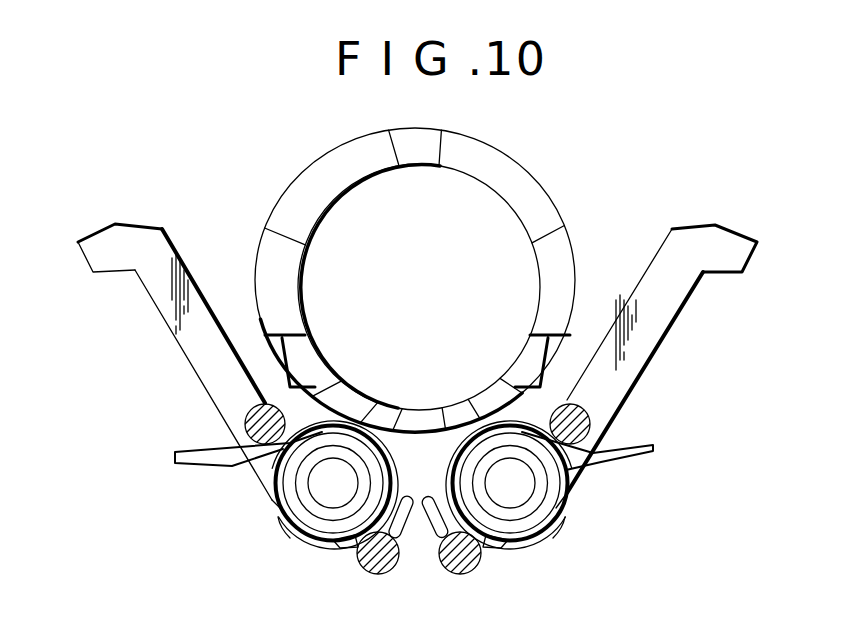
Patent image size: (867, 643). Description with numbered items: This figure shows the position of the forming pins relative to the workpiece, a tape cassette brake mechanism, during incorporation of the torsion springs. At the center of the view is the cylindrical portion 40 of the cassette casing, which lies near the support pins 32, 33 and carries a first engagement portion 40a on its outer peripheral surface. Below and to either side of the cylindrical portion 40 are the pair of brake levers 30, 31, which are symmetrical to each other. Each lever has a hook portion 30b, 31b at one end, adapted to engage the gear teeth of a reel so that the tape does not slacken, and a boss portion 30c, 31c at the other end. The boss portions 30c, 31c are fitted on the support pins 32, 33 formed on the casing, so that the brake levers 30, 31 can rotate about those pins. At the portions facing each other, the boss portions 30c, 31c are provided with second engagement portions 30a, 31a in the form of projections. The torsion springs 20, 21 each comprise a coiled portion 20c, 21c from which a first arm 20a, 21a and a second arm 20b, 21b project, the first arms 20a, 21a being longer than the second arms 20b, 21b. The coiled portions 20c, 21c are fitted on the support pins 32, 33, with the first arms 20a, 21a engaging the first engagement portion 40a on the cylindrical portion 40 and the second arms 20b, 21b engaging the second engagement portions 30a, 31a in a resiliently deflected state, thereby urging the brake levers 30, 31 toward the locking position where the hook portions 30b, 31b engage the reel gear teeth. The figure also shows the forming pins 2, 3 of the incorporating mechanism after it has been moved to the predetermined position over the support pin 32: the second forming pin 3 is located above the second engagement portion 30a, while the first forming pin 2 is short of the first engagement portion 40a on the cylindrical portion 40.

The cylindrical portion 40 is at (505, 166).
The first engagement portion 40a is at (270, 356).
The brake lever 30 is at (175, 362).
The hook portion 30b is at (92, 256).
The boss portion 30c is at (350, 428).
The second engagement portion 30a is at (363, 566).
The brake lever 31 is at (662, 359).
The hook portion 31b is at (740, 258).
The boss portion 31c is at (480, 428).
The second engagement portion 31a is at (480, 573).
The torsion spring 20 is at (267, 488).
The first arm 20a is at (180, 464).
The second arm 20b is at (326, 548).
The coiled portion 20c is at (279, 530).
The torsion spring 21 is at (563, 517).
The first arm 21a is at (652, 452).
The second arm 21b is at (496, 550).
The coiled portion 21c is at (570, 490).
The support pin 32 is at (273, 502).
The support pin 33 is at (542, 526).
The first forming pin 2 is at (246, 418).
The second forming pin 3 is at (592, 420).